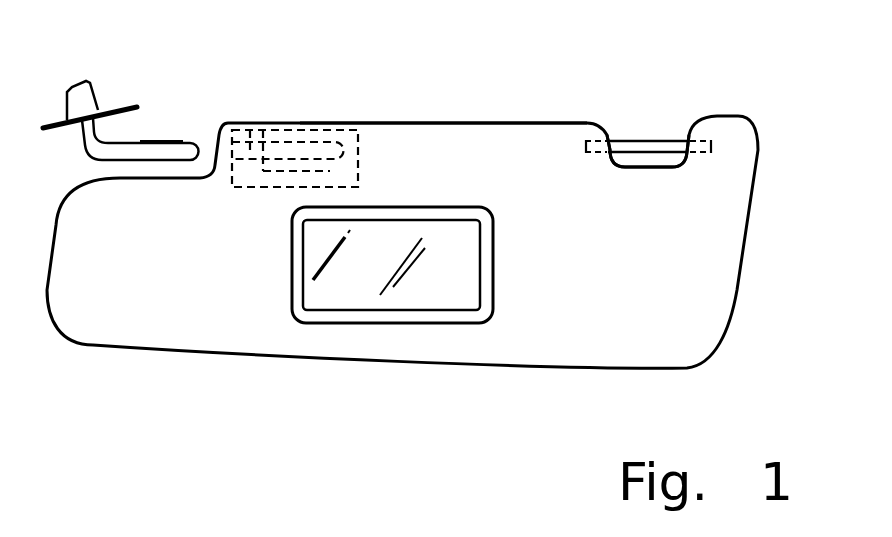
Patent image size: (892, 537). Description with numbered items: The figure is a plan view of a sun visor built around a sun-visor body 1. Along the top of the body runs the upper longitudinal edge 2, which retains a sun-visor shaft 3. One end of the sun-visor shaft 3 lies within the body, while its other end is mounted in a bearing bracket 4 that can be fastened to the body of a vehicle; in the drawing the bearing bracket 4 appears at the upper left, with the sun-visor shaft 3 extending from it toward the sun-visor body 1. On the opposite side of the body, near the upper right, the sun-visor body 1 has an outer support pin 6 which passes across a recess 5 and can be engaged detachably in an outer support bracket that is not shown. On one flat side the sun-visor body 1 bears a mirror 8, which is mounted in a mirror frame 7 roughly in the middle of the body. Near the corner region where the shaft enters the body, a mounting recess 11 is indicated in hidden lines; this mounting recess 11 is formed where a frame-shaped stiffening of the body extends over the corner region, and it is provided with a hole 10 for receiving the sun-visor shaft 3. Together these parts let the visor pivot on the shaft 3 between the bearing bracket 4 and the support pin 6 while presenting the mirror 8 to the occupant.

The sun-visor body 1 is at (690, 317).
The upper longitudinal edge 2 is at (480, 120).
The sun-visor shaft 3 is at (187, 148).
The bearing bracket 4 is at (92, 103).
The recess 5 is at (628, 160).
The outer support pin 6 is at (660, 137).
The mirror frame 7 is at (343, 323).
The mirror 8 is at (443, 278).
The hole 10 is at (337, 148).
The mounting recess 11 is at (360, 158).